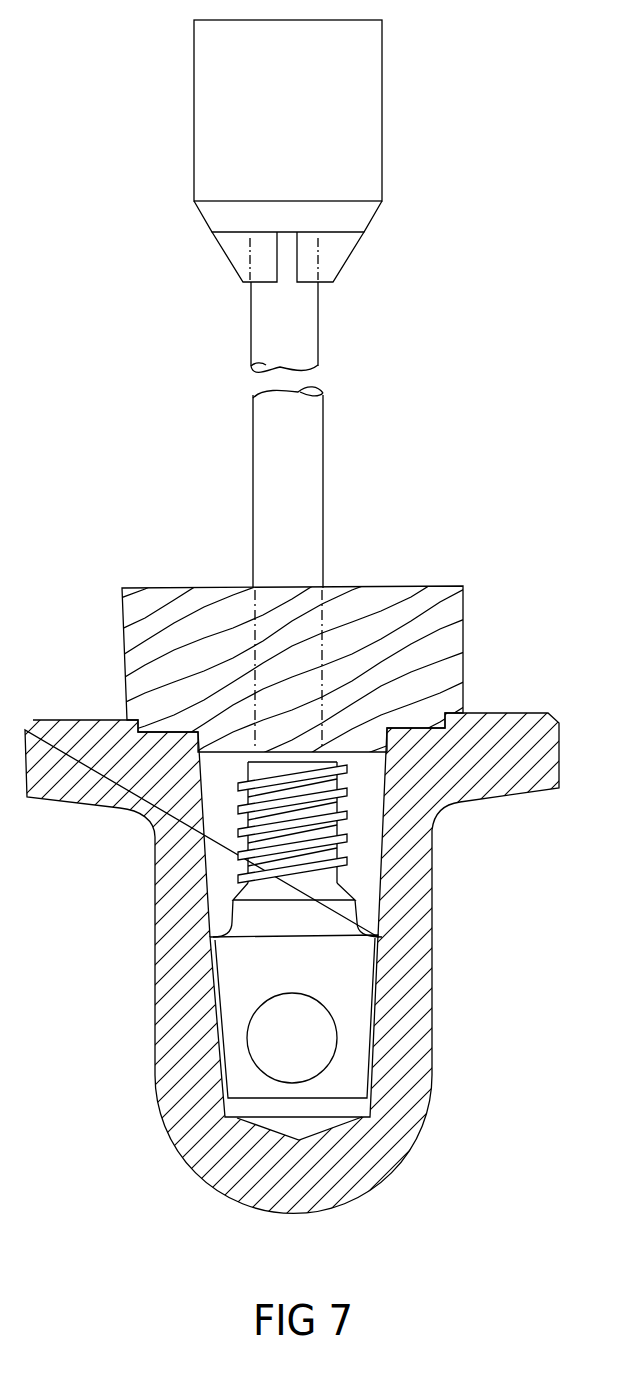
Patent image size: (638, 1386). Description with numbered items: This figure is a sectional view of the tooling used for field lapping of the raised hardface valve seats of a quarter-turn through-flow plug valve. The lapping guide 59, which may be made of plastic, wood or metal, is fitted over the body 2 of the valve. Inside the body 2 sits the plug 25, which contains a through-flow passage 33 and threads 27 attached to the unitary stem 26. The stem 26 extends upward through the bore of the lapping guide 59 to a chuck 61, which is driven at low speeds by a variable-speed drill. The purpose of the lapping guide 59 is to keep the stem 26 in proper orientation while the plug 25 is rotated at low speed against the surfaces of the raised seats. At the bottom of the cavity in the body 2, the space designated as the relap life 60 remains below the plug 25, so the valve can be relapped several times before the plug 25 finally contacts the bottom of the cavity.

The chuck 61 is at (363, 166).
The unitary stem 26 is at (278, 506).
The lapping guide 59 is at (438, 645).
The body 2 is at (413, 1048).
The threads 27 is at (347, 832).
The plug 25 is at (233, 955).
The through-flow passage 33 is at (312, 1057).
The relap life 60 is at (242, 1107).